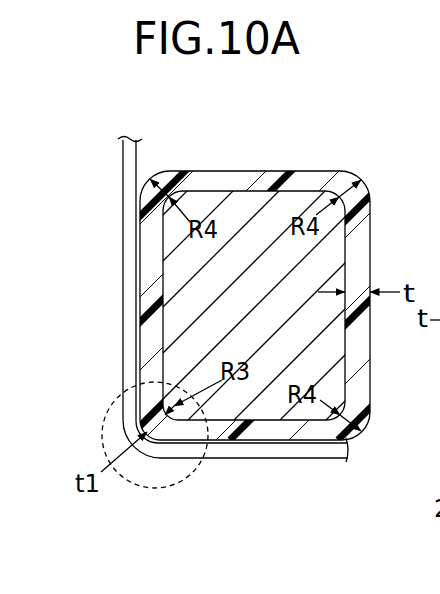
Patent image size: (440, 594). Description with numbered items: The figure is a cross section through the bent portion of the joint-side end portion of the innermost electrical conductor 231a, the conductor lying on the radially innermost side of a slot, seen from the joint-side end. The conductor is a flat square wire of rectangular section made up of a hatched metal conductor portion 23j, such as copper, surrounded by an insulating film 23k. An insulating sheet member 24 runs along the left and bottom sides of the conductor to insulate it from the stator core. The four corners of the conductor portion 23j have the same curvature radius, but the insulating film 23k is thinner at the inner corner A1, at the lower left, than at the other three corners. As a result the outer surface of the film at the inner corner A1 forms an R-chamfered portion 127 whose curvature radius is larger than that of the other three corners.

The insulating sheet member 24 is at (123, 173).
The R-chamfered portion 127 is at (168, 446).
The innermost electrical conductor 231a is at (331, 167).
The insulating film 23k is at (266, 172).
The conductor portion 23j is at (243, 238).
The inner corner A1 is at (103, 420).